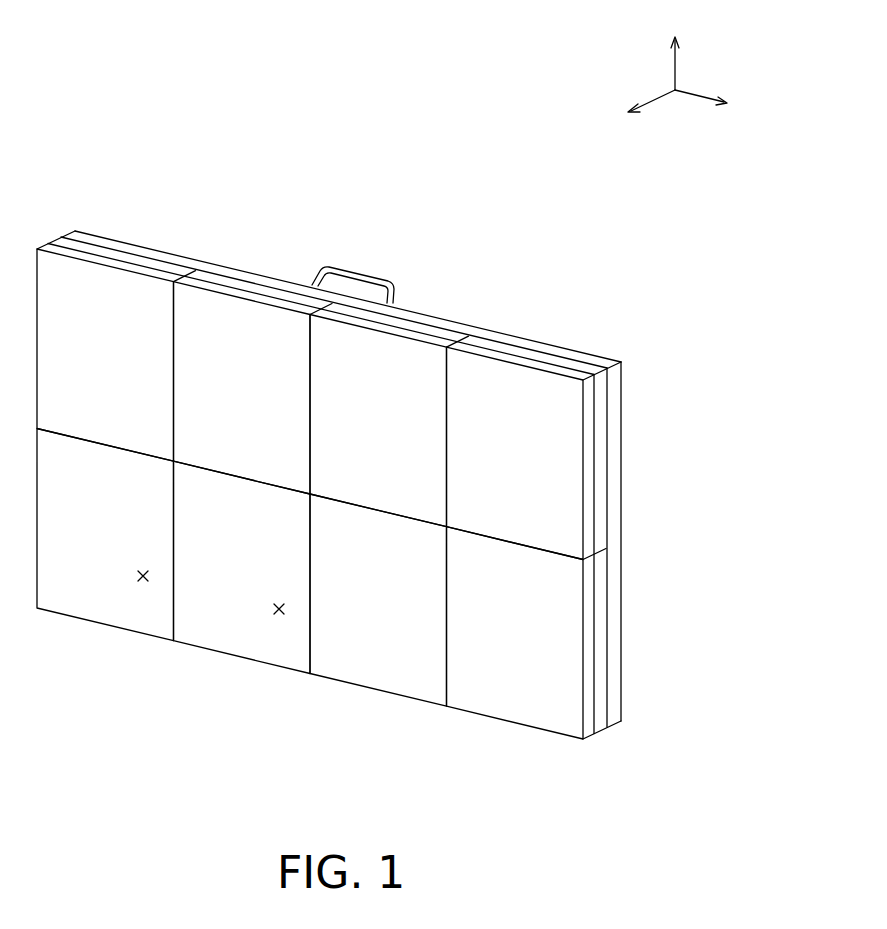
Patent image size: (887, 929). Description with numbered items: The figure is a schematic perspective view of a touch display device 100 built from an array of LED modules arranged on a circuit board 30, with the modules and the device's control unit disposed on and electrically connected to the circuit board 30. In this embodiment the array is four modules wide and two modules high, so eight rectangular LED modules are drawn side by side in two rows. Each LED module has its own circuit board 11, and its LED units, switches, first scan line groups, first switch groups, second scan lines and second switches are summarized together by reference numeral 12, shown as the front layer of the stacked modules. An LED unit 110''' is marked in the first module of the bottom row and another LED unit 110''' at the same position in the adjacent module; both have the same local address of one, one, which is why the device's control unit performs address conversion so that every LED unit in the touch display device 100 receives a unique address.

The touch display device 100 is at (408, 182).
The LED units, switches, scan line groups and switch groups 12 is at (82, 255).
The circuit board 11 is at (135, 262).
The LED unit 110''' is at (220, 647).
The circuit board 30 is at (612, 455).